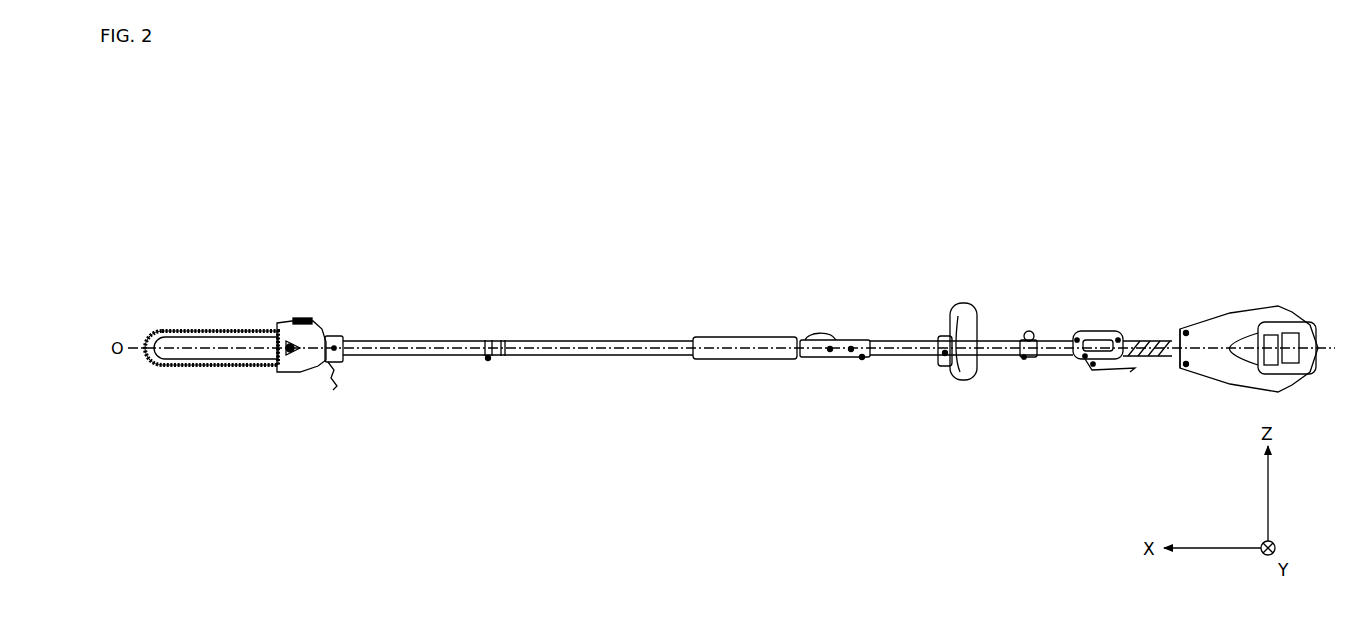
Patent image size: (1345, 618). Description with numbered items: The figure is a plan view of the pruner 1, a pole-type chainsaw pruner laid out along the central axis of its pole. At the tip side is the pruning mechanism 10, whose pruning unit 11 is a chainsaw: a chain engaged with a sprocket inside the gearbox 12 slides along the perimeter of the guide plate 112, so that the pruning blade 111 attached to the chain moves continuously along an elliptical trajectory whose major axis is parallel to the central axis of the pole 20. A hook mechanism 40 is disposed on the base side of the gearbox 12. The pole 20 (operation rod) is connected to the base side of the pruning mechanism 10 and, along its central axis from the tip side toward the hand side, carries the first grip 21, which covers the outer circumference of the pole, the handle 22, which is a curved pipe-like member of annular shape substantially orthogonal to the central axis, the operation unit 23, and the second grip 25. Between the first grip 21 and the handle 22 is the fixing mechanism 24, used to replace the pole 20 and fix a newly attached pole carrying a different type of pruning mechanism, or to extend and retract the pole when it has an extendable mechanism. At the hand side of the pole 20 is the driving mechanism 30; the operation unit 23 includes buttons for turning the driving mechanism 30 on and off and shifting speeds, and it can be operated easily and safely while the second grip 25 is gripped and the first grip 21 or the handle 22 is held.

The pruner 1 is at (1053, 196).
The pruning mechanism 10 is at (274, 300).
The pruning unit 11 is at (199, 327).
The pruning blade 111 is at (183, 366).
The guide plate 112 is at (233, 366).
The gearbox 12 is at (298, 372).
The hook mechanism 40 is at (332, 393).
The pole 20 is at (537, 340).
The first grip 21 is at (720, 338).
The fixing mechanism 24 is at (833, 326).
The handle 22 is at (963, 302).
The operation unit 23 is at (1100, 327).
The second grip 25 is at (1167, 333).
The driving mechanism 30 is at (1242, 296).